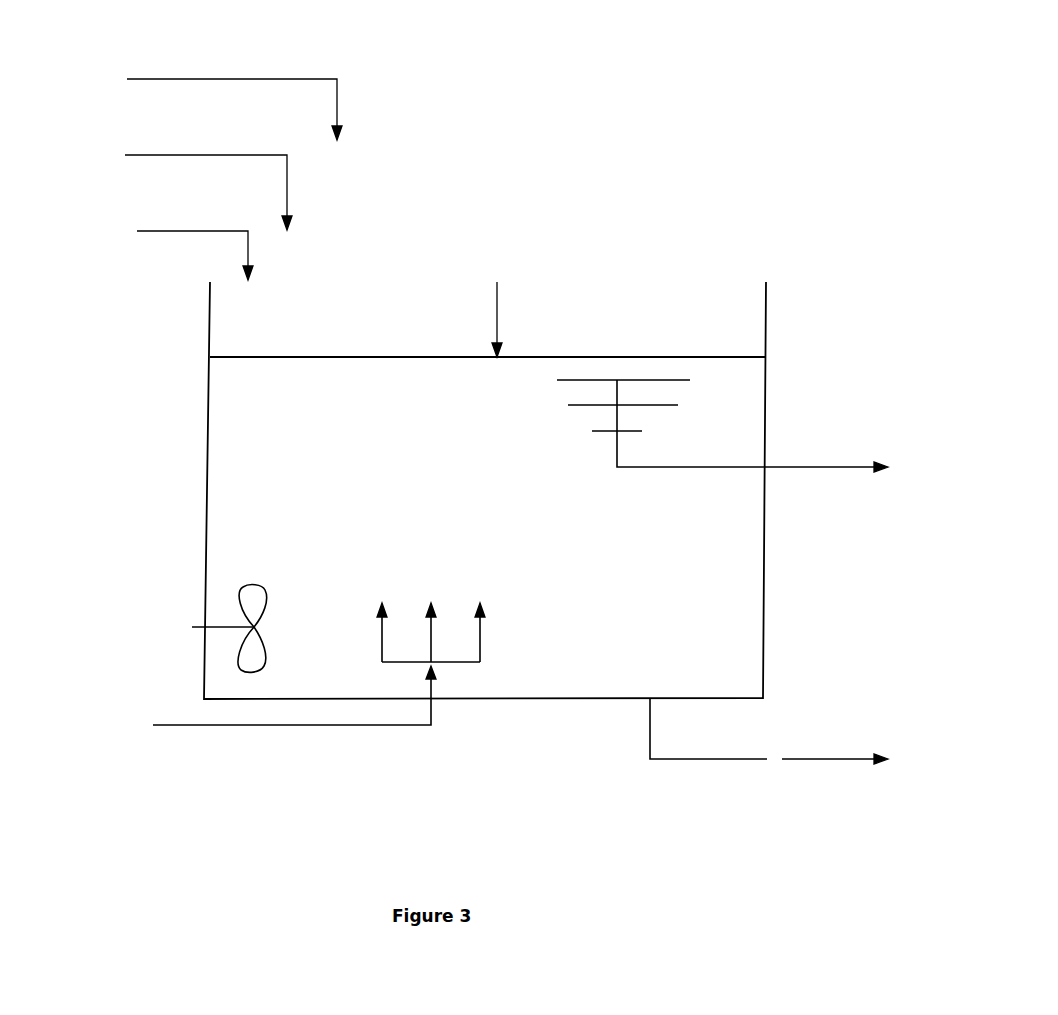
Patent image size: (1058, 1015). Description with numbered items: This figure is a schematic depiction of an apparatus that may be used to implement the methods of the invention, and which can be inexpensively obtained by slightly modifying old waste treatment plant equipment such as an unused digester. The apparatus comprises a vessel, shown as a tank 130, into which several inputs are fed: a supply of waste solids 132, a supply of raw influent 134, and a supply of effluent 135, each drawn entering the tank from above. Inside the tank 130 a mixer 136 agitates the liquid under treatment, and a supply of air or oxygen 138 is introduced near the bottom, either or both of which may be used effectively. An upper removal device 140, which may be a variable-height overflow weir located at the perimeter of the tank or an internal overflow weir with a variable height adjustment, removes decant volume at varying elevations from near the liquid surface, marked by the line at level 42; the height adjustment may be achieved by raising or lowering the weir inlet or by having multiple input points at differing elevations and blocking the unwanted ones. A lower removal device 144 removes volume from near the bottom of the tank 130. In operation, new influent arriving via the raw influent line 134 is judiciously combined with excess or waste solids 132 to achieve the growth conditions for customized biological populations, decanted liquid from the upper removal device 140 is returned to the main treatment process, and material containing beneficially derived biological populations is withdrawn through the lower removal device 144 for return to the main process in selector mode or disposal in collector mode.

The tank 130 is at (208, 457).
The liquid surface level 42 is at (504, 306).
The supply of waste solids 132 is at (215, 79).
The supply of raw influent 134 is at (188, 155).
The supply of effluent 135 is at (187, 231).
The upper removal device 140 is at (580, 405).
The mixer 136 is at (252, 629).
The supply of air or oxygen 138 is at (267, 725).
The lower removal device 144 is at (787, 759).